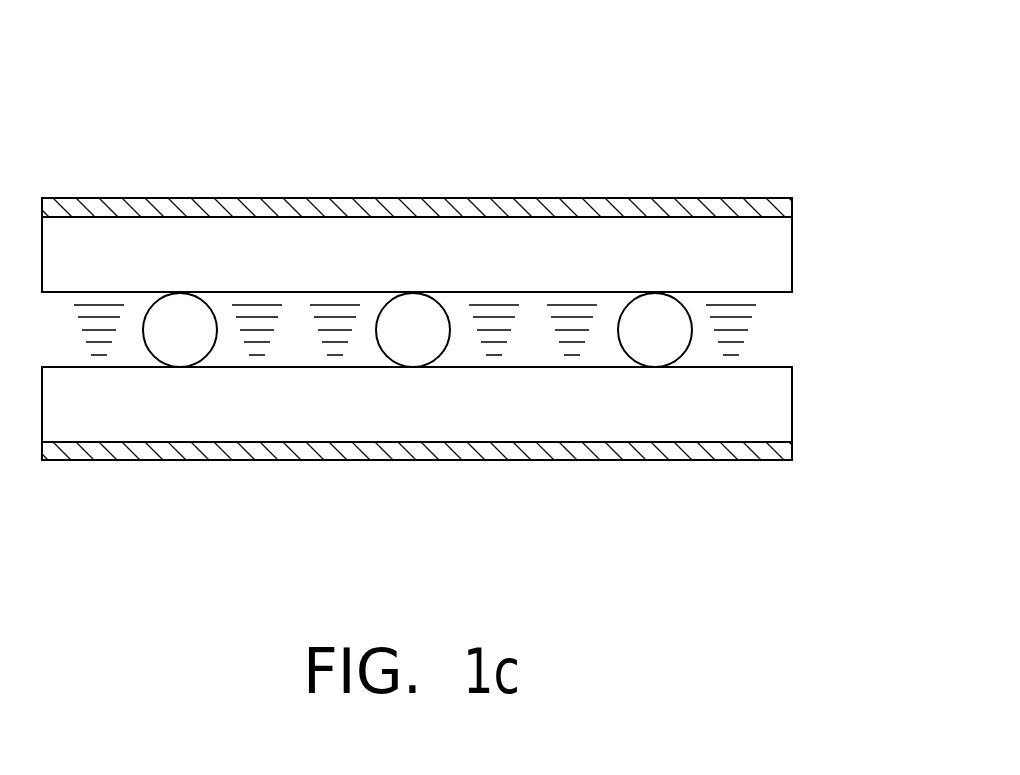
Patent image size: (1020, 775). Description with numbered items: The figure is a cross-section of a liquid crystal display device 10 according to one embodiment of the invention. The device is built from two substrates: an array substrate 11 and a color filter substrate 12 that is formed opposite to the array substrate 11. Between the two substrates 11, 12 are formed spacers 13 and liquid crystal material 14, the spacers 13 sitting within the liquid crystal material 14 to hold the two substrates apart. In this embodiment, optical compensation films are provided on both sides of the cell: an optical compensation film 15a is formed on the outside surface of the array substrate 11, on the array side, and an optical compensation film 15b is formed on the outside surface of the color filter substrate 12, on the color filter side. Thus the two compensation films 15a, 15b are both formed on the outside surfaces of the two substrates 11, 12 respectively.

The liquid crystal display device 10 is at (104, 173).
The array substrate 11 is at (777, 403).
The color filter substrate 12 is at (777, 252).
The spacers 13 is at (653, 305).
The liquid crystal material 14 is at (493, 313).
The optical compensation film 15a is at (792, 460).
The optical compensation film 15b is at (792, 200).